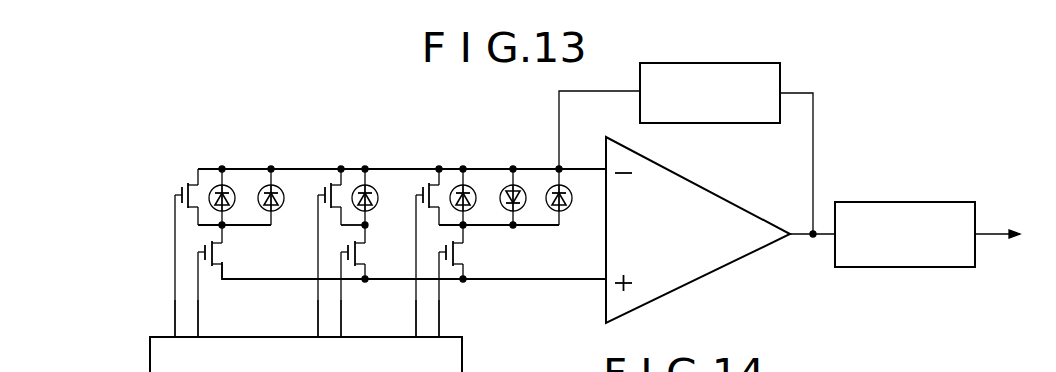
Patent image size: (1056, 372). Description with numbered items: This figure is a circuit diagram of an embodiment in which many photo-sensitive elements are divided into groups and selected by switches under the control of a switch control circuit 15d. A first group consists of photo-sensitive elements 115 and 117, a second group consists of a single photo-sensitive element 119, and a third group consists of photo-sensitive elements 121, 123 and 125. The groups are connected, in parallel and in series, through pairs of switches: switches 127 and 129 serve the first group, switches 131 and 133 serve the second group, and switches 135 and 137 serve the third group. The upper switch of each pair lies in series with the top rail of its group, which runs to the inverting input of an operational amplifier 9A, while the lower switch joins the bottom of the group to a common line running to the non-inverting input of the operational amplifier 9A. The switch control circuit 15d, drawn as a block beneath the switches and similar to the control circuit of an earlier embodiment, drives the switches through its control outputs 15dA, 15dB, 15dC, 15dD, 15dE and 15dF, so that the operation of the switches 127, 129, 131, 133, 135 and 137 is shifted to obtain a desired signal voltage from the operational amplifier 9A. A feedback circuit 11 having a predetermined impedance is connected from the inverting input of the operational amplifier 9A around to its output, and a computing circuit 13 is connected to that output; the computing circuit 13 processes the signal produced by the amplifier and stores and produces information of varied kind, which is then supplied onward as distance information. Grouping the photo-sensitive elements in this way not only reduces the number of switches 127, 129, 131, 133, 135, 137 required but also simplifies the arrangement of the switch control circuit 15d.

The photo-sensitive element 115 is at (233, 189).
The photo-sensitive element 117 is at (283, 189).
The photo-sensitive element 119 is at (378, 189).
The photo-sensitive element 121 is at (478, 187).
The photo-sensitive element 123 is at (526, 187).
The photo-sensitive element 125 is at (572, 187).
The switch 127 is at (185, 186).
The switch 129 is at (228, 249).
The switch 131 is at (328, 181).
The switching transistor 133 is at (360, 253).
The switch 135 is at (422, 181).
The switch 137 is at (466, 252).
The switch control circuit 15d is at (465, 360).
The switch control signal line 15dA is at (172, 336).
The switch control signal line 15dB is at (200, 336).
The switch control signal line 15dC is at (315, 336).
The switch control signal line 15dD is at (343, 336).
The switch control signal line 15dE is at (411, 341).
The switch control signal line 15dF is at (441, 336).
The feedback circuit 11 is at (745, 125).
The operational amplifier 9A is at (794, 240).
The computing circuit 13 is at (918, 202).